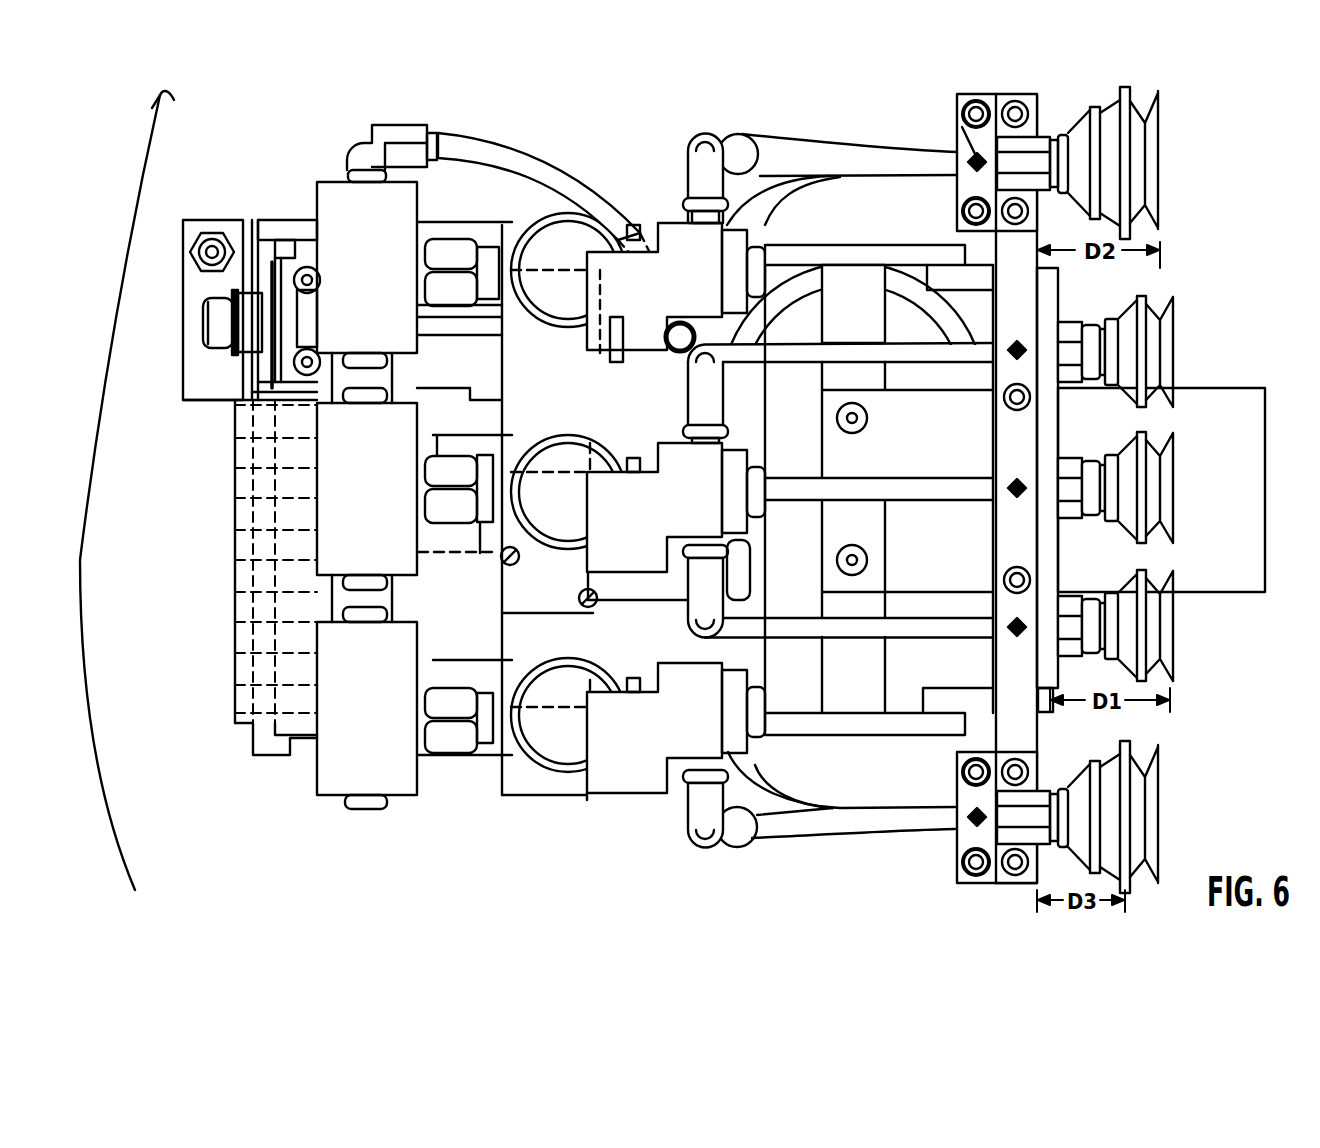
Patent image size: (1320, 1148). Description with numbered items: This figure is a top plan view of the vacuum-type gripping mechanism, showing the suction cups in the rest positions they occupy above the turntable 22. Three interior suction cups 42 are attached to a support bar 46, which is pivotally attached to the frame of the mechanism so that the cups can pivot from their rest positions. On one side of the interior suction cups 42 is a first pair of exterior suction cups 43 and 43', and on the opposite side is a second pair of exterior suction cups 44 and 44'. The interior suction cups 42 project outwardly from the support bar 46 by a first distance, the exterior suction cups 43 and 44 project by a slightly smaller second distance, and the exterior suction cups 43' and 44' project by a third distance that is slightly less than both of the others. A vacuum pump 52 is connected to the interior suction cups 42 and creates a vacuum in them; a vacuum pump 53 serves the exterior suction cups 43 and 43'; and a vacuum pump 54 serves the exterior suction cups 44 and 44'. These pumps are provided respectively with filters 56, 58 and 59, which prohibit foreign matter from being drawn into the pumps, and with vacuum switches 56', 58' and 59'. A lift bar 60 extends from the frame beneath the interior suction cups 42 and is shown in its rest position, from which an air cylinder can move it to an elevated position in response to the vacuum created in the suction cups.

The turntable 22 is at (122, 490).
The interior suction cups 42 is at (1175, 316).
The exterior suction cup 43 is at (1106, 817).
The exterior suction cup 43' is at (1027, 805).
The exterior suction cup 44 is at (1106, 163).
The exterior suction cup 44' is at (1027, 147).
The support bar 46 is at (1028, 441).
The vacuum pump 52 is at (381, 511).
The vacuum pump 53 is at (381, 727).
The vacuum pump 54 is at (381, 286).
The filter 56 is at (579, 470).
The vacuum switch 56' is at (676, 500).
The filter 58 is at (581, 699).
The vacuum switch 58' is at (676, 755).
The filter 59 is at (551, 252).
The vacuum switch 59' is at (676, 248).
The lift bar 60 is at (1202, 388).